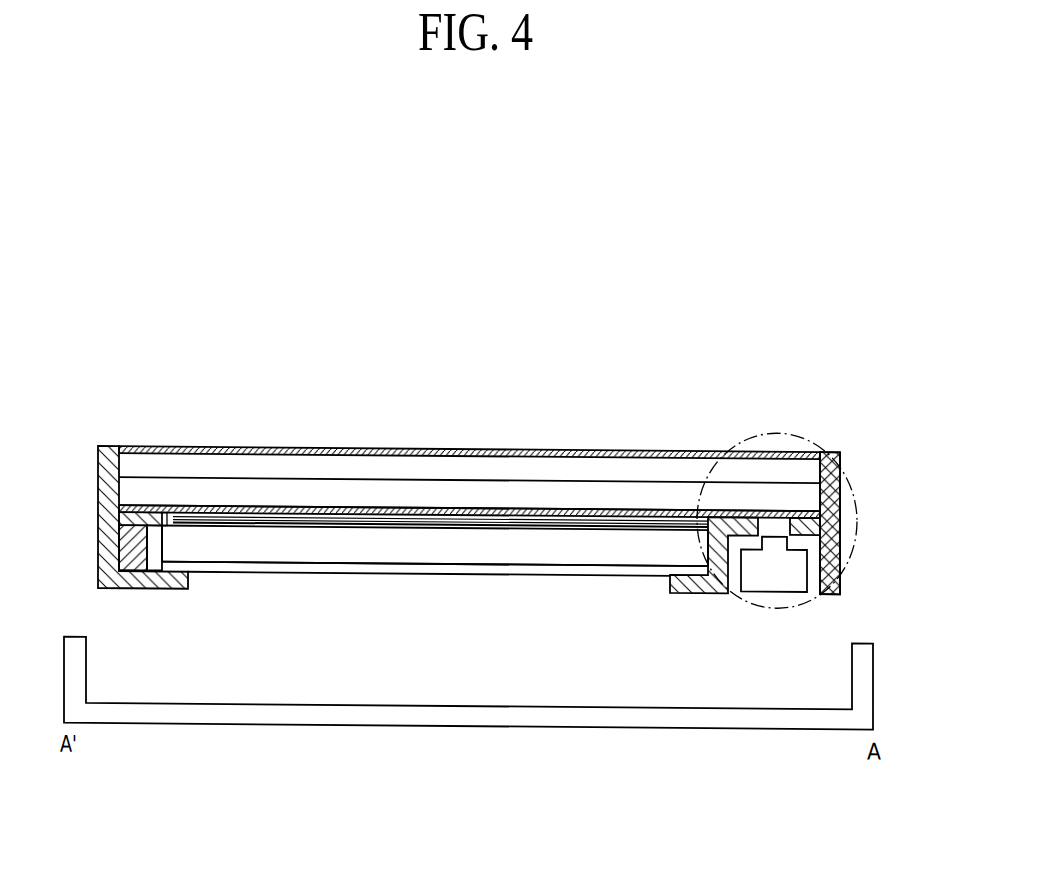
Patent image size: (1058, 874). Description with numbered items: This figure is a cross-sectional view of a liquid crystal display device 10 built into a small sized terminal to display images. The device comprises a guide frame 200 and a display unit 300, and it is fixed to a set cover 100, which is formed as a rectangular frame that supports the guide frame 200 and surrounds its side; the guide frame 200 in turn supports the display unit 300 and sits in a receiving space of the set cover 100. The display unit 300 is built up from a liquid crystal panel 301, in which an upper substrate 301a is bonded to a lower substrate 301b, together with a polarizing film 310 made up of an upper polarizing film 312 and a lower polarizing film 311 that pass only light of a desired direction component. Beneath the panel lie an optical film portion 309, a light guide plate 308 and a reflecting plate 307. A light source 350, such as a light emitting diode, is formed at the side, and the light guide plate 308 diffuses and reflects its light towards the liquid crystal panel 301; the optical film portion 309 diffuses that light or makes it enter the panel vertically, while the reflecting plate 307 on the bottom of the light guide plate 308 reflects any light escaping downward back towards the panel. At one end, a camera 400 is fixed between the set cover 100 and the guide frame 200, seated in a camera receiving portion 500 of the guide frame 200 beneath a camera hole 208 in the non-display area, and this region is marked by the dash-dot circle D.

The liquid crystal display device 10 is at (776, 283).
The set cover 100 is at (467, 712).
The guide frame 200 is at (108, 483).
The camera hole 208 is at (777, 517).
The display unit 300 is at (620, 342).
The liquid crystal panel 301 is at (312, 393).
The upper substrate 301a is at (312, 468).
The lower substrate 301b is at (238, 487).
The reflecting plate 307 is at (384, 568).
The light guide plate 308 is at (452, 545).
The optical film portion 309 is at (518, 517).
The polarizing film 310 is at (668, 395).
The lower polarizing film 311 is at (593, 503).
The upper polarizing film 312 is at (667, 438).
The light source 350 is at (147, 540).
The camera 400 is at (798, 560).
The camera receiving portion 500 is at (735, 573).
The detail region D is at (778, 602).